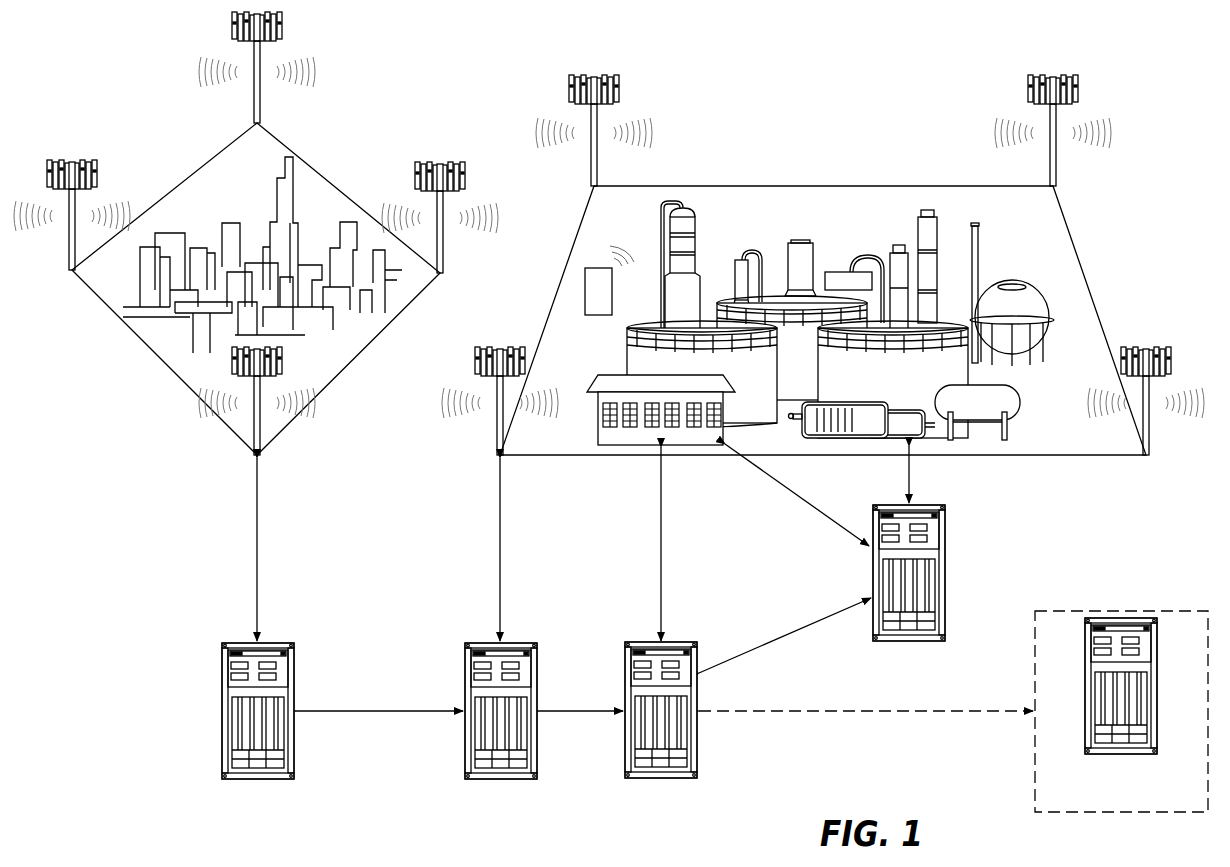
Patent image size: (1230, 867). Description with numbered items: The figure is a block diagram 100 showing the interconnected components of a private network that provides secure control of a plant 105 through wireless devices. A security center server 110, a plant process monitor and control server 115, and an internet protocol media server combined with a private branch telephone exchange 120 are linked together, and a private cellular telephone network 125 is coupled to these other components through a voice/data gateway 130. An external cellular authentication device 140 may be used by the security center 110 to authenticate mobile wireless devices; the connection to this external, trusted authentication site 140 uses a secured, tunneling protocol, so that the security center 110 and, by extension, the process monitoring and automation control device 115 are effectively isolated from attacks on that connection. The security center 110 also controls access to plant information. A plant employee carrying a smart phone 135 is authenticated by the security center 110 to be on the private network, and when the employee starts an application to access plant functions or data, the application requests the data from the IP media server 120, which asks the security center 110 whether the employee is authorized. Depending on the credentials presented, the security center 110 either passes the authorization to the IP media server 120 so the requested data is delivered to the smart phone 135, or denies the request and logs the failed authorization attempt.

The block diagram 100 is at (1162, 62).
The plant 105 is at (1089, 283).
The security center server 110 is at (623, 680).
The plant process monitor and control server 115 is at (947, 572).
The IP media server combined with private branch telephone exchange 120 is at (463, 680).
The private cellular telephone network 125 is at (163, 361).
The voice/data gateway 130 is at (220, 677).
The smart phone 135 is at (585, 291).
The external cellular authentication device 140 is at (1120, 612).